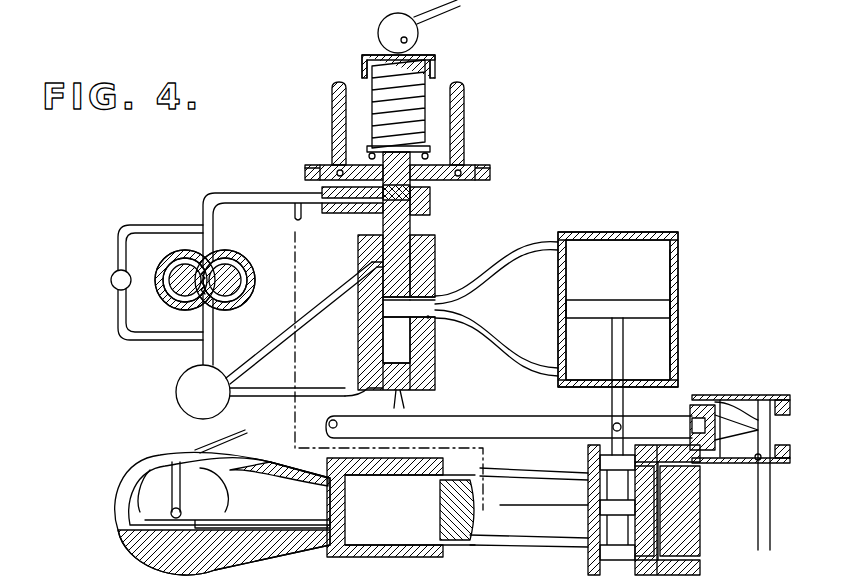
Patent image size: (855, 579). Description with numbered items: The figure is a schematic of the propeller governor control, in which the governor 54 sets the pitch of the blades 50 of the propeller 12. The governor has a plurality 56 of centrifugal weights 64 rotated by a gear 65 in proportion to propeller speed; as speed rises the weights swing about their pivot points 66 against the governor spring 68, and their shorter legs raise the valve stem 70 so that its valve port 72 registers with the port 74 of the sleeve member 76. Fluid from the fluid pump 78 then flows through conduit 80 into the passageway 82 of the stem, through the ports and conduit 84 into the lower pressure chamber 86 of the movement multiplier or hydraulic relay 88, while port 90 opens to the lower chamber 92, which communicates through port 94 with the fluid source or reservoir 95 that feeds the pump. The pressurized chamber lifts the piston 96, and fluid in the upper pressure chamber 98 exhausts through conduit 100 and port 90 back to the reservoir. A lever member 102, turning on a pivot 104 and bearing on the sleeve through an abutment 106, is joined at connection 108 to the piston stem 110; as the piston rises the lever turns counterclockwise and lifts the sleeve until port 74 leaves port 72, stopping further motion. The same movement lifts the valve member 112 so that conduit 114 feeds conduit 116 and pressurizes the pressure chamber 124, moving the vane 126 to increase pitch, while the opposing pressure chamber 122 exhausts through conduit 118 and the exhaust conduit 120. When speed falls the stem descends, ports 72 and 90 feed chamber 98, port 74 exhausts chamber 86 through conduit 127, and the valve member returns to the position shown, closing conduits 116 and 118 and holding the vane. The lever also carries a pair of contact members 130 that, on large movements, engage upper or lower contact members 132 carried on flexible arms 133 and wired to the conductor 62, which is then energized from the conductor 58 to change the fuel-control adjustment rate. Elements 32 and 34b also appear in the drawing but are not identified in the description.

The propeller 12 is at (112, 505).
The actuator cylinder 32 is at (390, 578).
The passage 34b is at (562, 572).
The propeller blades 50 is at (112, 575).
The governor 54 is at (682, 248).
The plurality of centrifugal weights 56 is at (466, 110).
The conductor 58 is at (778, 566).
The conductor 62 is at (760, 438).
The centrifugal weights 64 is at (332, 90).
The gear 65 is at (491, 173).
The pivot points 66 is at (338, 172).
The governor spring 68 is at (430, 82).
The valve stem 70 is at (406, 224).
The valve port 72 is at (383, 306).
The port 74 is at (412, 292).
The sleeve member 76 is at (432, 245).
The fluid pump 78 is at (163, 305).
The conduit 80 is at (258, 194).
The passageway 82 is at (385, 215).
The conduit 84 is at (498, 356).
The lower pressure chamber 86 is at (655, 354).
The movement multiplier 88 is at (680, 273).
The port 90 is at (428, 318).
The lower chamber 92 is at (395, 346).
The port 94 is at (378, 395).
The source of fluid supply 95 is at (248, 348).
The piston 96 is at (664, 308).
The pressure chamber 98 is at (628, 274).
The conduit 100 is at (508, 282).
The lever member 102 is at (533, 416).
The pivot 104 is at (287, 399).
The abutment 106 is at (404, 405).
The connection 108 is at (613, 424).
The piston stem 110 is at (625, 404).
The valve member 112 is at (628, 506).
The conduit 114 is at (570, 505).
The conduit 116 is at (550, 540).
The conduit 118 is at (520, 474).
The exhaust conduit 120 is at (682, 490).
The pressure chamber 122 is at (220, 505).
The pressure chamber 124 is at (160, 505).
The vane 126 is at (172, 462).
The conduit 127 is at (327, 280).
The contact members 130 is at (737, 396).
The contact members 132 is at (715, 382).
The flexible arms 133 is at (758, 396).